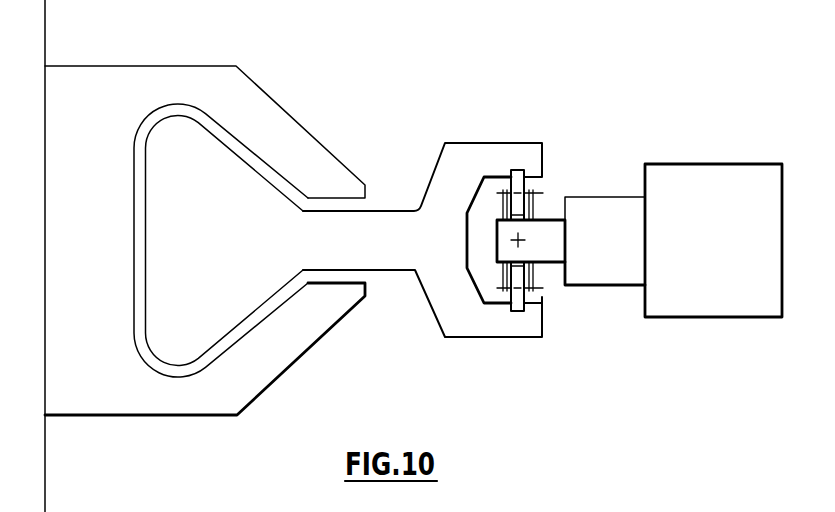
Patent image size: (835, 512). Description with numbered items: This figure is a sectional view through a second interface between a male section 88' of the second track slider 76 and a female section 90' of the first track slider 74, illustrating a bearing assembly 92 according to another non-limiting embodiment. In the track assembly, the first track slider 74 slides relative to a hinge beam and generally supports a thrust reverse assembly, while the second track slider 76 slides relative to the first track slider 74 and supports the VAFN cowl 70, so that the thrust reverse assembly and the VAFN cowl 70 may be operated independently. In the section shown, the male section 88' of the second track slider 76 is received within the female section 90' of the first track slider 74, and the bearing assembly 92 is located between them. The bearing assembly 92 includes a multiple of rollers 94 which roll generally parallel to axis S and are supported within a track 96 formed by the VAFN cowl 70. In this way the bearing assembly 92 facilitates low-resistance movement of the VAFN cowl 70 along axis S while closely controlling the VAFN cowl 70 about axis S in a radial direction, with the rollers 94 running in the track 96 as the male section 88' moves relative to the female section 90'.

The VAFN cowl 70 is at (725, 250).
The first track slider 74 is at (163, 253).
The second track slider 76 is at (632, 250).
The male section 88' is at (561, 212).
The female section 90' is at (422, 222).
The bearing assembly 92 is at (548, 300).
The rollers 94 is at (516, 170).
The track 96 is at (517, 311).
The axis S is at (522, 243).